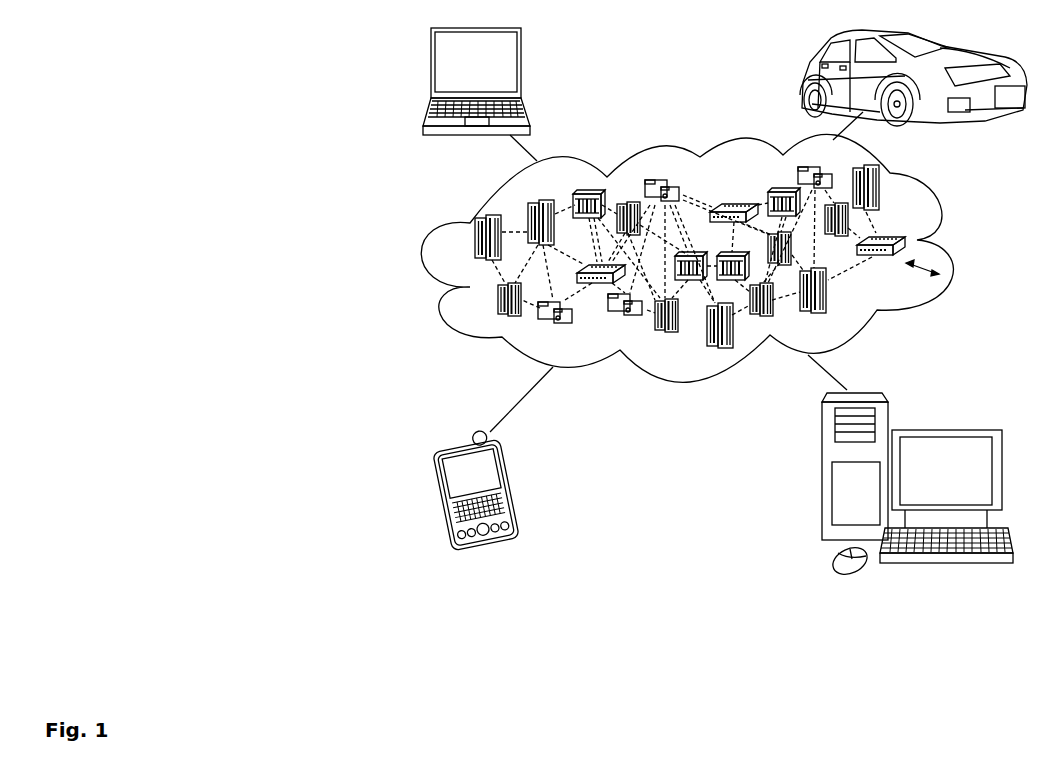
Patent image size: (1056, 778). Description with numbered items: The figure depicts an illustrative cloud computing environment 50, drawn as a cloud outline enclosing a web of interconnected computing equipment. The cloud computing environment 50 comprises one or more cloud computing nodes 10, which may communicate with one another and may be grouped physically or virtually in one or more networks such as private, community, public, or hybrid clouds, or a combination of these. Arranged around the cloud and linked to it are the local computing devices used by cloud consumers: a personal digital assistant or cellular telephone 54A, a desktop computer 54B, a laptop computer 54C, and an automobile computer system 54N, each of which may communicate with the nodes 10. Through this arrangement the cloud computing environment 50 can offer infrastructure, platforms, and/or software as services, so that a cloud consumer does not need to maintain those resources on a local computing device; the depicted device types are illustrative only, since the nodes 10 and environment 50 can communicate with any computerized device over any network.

The cloud computing nodes 10 is at (930, 278).
The cloud computing environment 50 is at (945, 244).
The personal digital assistant (PDA) or cellular telephone 54A is at (515, 491).
The desktop computer 54B is at (951, 415).
The laptop computer 54C is at (523, 68).
The automobile computer system 54N is at (803, 78).